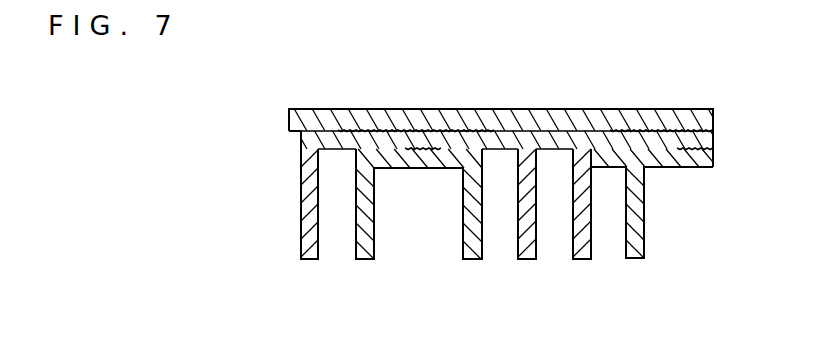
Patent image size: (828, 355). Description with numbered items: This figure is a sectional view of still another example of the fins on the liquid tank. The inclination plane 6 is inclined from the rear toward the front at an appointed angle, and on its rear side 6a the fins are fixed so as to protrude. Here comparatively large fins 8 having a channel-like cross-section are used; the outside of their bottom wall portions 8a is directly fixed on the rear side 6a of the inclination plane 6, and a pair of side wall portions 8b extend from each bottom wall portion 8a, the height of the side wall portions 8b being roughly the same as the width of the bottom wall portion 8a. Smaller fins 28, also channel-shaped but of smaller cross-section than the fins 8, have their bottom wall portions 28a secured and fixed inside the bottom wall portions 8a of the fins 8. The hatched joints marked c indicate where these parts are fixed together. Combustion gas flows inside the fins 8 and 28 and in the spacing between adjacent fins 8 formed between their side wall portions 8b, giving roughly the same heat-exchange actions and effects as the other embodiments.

The inclination plane 6 is at (545, 120).
The rear side of the inclination plane 6a is at (290, 133).
The fin 8 is at (303, 261).
The bottom wall portion 8a is at (335, 130).
The side wall portion 8b is at (302, 234).
The smaller fin 28 is at (428, 259).
The bottom wall portion of the smaller fin 28a is at (419, 168).
The crack c is at (428, 130).